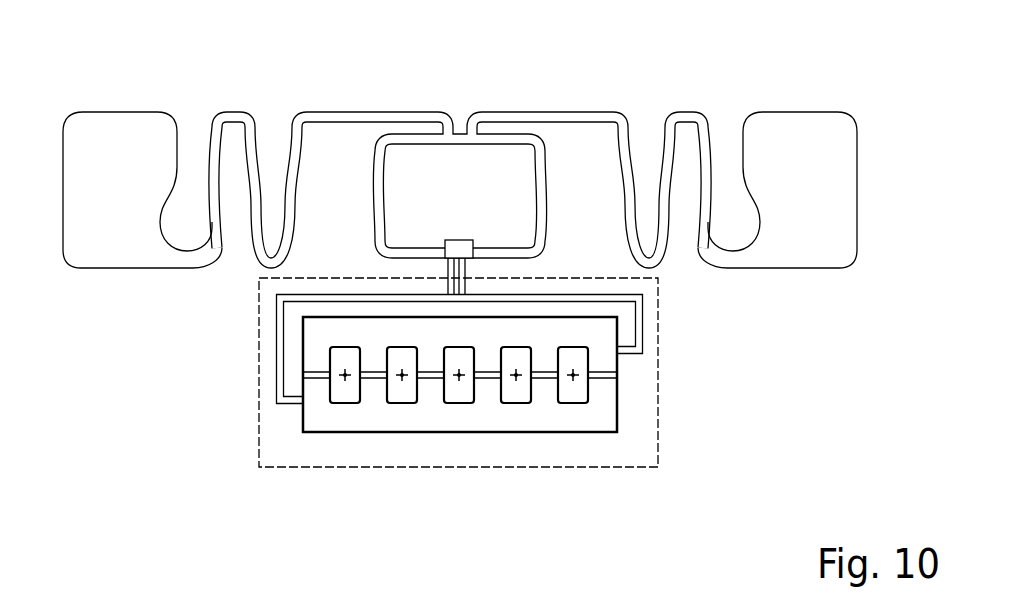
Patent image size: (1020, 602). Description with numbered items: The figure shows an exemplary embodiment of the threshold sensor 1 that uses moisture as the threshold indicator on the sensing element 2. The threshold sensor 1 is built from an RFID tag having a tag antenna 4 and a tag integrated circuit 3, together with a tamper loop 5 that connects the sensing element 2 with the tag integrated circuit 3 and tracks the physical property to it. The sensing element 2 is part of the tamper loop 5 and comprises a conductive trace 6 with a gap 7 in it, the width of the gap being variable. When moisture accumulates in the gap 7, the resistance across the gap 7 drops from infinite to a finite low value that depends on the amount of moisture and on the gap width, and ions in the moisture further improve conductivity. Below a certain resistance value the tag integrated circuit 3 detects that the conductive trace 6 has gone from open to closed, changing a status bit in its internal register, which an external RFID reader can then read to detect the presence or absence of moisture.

The threshold sensor 1 is at (823, 56).
The sensing element 2 is at (643, 412).
The tag integrated circuit 3 is at (457, 236).
The tag antenna 4 is at (644, 117).
The tamper loop 5 is at (513, 468).
The conductive trace 6 is at (643, 318).
The gap 7 is at (628, 375).